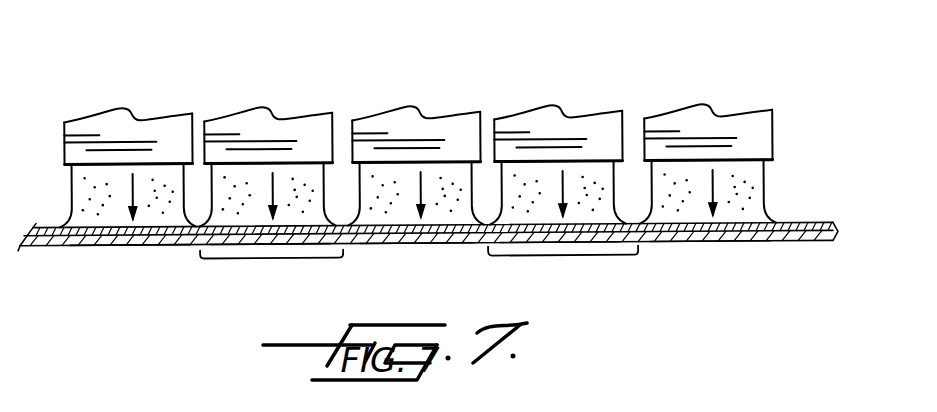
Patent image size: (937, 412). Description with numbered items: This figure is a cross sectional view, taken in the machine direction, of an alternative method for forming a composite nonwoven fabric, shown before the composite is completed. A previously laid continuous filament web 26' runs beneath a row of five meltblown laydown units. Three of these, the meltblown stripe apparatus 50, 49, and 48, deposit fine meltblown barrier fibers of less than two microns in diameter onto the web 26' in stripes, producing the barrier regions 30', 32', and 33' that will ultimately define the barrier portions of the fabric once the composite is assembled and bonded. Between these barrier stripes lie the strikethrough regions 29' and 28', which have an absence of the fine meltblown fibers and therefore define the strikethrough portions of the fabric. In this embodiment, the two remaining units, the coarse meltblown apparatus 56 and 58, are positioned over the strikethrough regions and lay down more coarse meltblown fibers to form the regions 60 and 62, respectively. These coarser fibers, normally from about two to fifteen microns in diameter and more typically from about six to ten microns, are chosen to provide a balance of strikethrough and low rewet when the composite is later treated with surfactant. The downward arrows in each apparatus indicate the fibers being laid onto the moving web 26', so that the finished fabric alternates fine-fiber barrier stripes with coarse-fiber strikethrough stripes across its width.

The continuous filament web 26' is at (428, 278).
The meltblown stripe apparatus 50 is at (132, 128).
The coarse meltblown apparatus 56 is at (262, 128).
The meltblown stripe apparatus 49 is at (430, 130).
The coarse meltblown apparatus 58 is at (556, 132).
The meltblown stripe apparatus 48 is at (697, 120).
The coarse meltblown fiber region 60 is at (268, 260).
The coarse meltblown fiber region 62 is at (577, 244).
The barrier region 30' is at (130, 275).
The strikethrough region 29' is at (270, 275).
The barrier region 32' is at (409, 274).
The strikethrough region 28' is at (560, 274).
The barrier region 33' is at (710, 269).